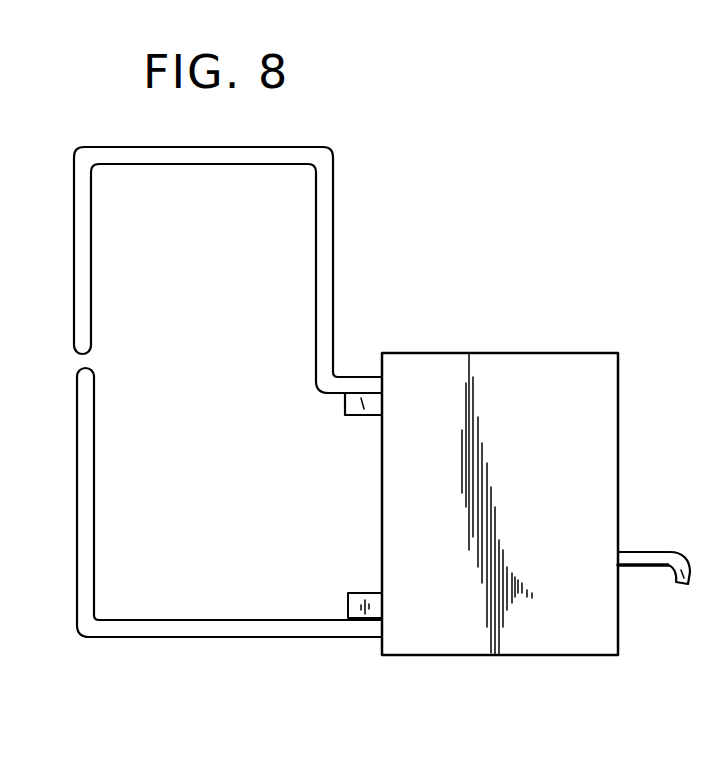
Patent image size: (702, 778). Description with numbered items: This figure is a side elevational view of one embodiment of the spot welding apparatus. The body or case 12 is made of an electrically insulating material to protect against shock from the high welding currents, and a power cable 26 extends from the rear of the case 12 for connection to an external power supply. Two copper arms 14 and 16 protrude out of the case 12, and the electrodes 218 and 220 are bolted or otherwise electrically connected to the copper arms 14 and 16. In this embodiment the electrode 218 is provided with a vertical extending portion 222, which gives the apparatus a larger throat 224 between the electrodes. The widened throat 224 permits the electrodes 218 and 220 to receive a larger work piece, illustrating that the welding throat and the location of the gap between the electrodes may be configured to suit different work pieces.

The case 12 is at (443, 355).
The copper arm 14 is at (348, 415).
The copper arm 16 is at (347, 597).
The power cable 26 is at (653, 566).
The electrode 218 is at (91, 296).
The electrode 220 is at (97, 568).
The vertical extending portion 222 is at (325, 275).
The throat 224 is at (235, 373).